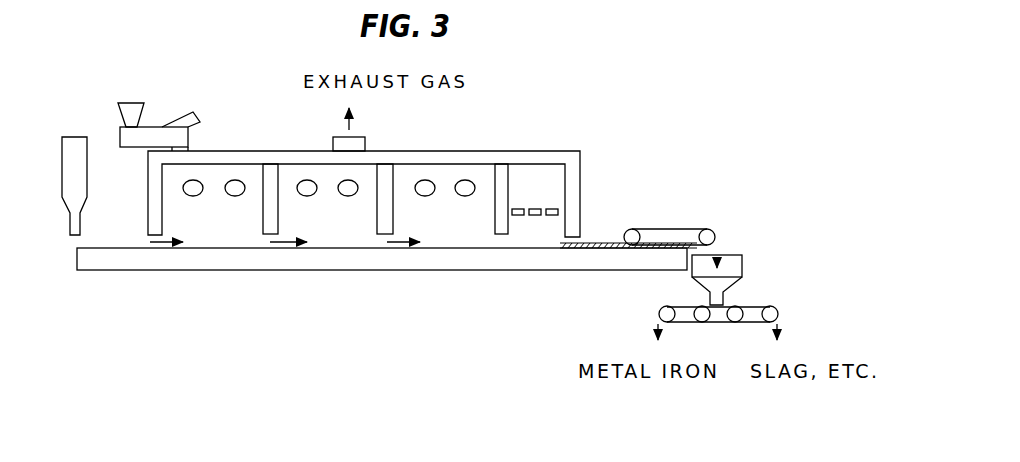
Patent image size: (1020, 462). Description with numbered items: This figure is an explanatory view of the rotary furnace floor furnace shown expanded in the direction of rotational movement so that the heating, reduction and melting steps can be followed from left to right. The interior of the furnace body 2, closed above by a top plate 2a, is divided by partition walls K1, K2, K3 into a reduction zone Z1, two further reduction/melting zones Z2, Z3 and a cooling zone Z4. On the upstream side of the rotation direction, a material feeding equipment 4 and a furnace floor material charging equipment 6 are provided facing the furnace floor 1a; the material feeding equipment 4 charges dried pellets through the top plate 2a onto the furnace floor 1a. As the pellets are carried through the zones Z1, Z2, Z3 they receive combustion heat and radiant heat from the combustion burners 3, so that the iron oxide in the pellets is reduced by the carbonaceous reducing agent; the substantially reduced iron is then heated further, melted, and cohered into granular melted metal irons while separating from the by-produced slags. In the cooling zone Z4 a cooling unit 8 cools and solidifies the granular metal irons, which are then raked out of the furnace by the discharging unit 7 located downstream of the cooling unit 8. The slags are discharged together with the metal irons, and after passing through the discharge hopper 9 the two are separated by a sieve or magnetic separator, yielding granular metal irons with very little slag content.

The furnace floor 1a is at (243, 260).
The furnace body 2 is at (572, 177).
The top plate 2a is at (224, 150).
The combustion burner 3 is at (197, 194).
The material feeding equipment 4 is at (163, 108).
The furnace floor material charging equipment 6 is at (72, 143).
The discharging unit 7 is at (664, 222).
The cooling unit 8 is at (558, 212).
The discharge hopper 9 is at (735, 268).
The partition wall K1 is at (271, 176).
The partition wall K2 is at (386, 178).
The partition wall K3 is at (500, 178).
The reduction zone Z1 is at (204, 240).
The reduction/melting zone Z2 is at (332, 240).
The reduction/melting zone Z3 is at (449, 240).
The cooling zone Z4 is at (525, 240).